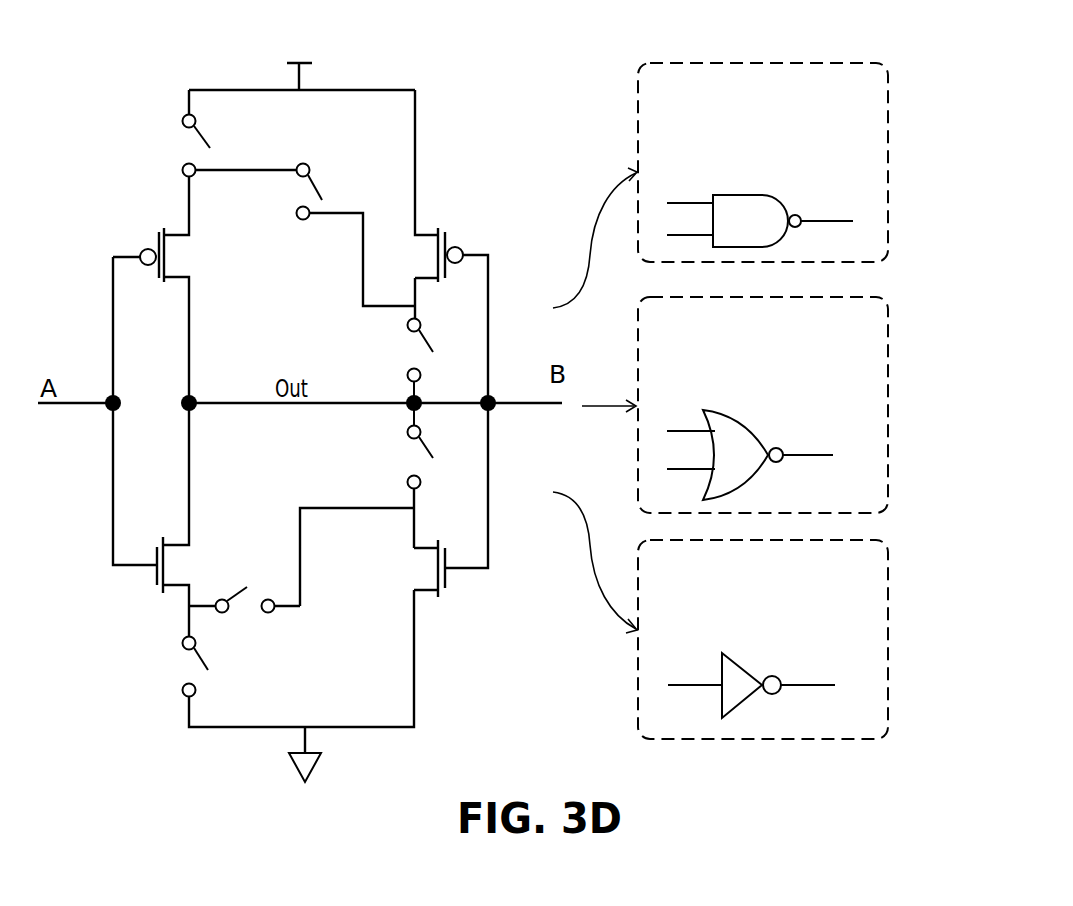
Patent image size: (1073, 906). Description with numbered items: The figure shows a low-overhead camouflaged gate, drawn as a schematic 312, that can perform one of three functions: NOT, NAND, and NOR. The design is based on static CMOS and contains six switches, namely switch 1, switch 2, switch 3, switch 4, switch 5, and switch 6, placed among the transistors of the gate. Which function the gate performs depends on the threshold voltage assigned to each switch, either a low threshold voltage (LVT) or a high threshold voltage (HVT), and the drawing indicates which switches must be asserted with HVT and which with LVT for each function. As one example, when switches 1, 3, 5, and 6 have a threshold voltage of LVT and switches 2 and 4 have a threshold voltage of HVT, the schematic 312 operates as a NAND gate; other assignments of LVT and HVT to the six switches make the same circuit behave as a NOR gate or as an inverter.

The switch 1 is at (182, 146).
The switch 2 is at (300, 192).
The switch 3 is at (410, 361).
The switch 4 is at (182, 667).
The switch 5 is at (244, 585).
The switch 6 is at (411, 446).
The schematic 312 is at (952, 76).